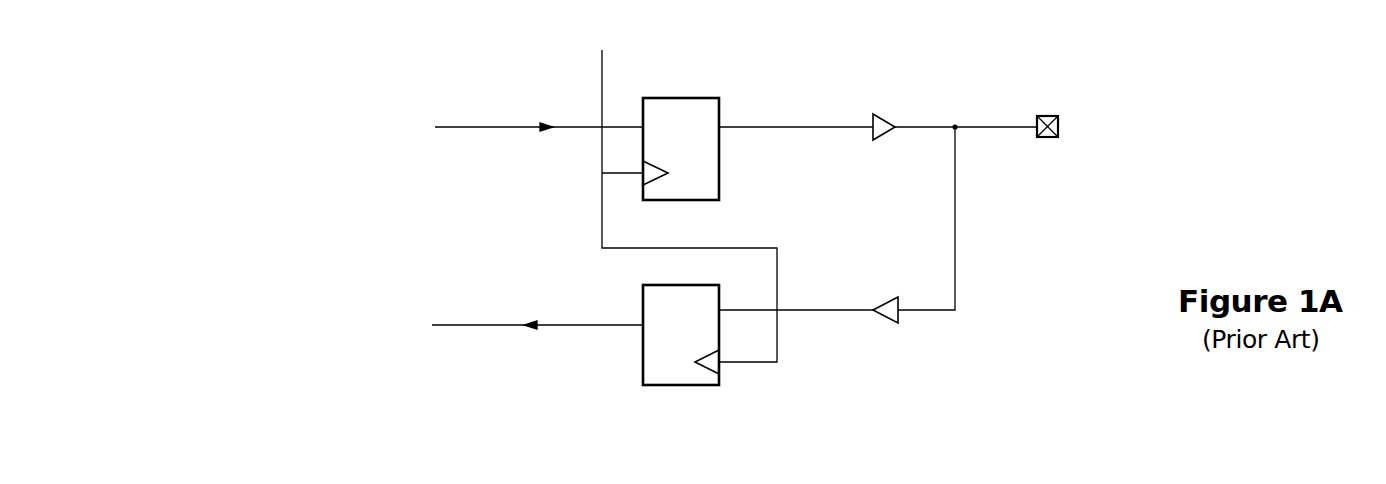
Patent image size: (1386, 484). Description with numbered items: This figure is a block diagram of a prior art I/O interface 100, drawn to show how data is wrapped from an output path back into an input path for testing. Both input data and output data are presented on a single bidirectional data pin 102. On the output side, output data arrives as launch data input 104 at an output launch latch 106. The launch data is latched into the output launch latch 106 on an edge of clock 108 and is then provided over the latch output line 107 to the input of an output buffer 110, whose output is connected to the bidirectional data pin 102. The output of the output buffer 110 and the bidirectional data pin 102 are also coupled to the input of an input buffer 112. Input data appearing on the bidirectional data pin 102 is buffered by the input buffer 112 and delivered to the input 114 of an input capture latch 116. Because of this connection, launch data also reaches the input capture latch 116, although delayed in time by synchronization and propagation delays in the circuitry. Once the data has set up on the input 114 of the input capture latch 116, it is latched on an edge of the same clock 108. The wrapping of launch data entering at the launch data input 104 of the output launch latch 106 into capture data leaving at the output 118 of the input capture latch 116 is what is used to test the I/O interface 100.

The I/O interface 100 is at (989, 339).
The bidirectional data pin 102 is at (1044, 138).
The launch data input 104 is at (476, 126).
The output launch latch 106 is at (722, 103).
The latch output line 107 is at (759, 130).
The clock 108 is at (603, 61).
The output buffer 110 is at (895, 119).
The input buffer 112 is at (882, 320).
The input of input capture latch 114 is at (747, 308).
The input capture latch 116 is at (681, 380).
The output of input capture latch 118 is at (477, 324).